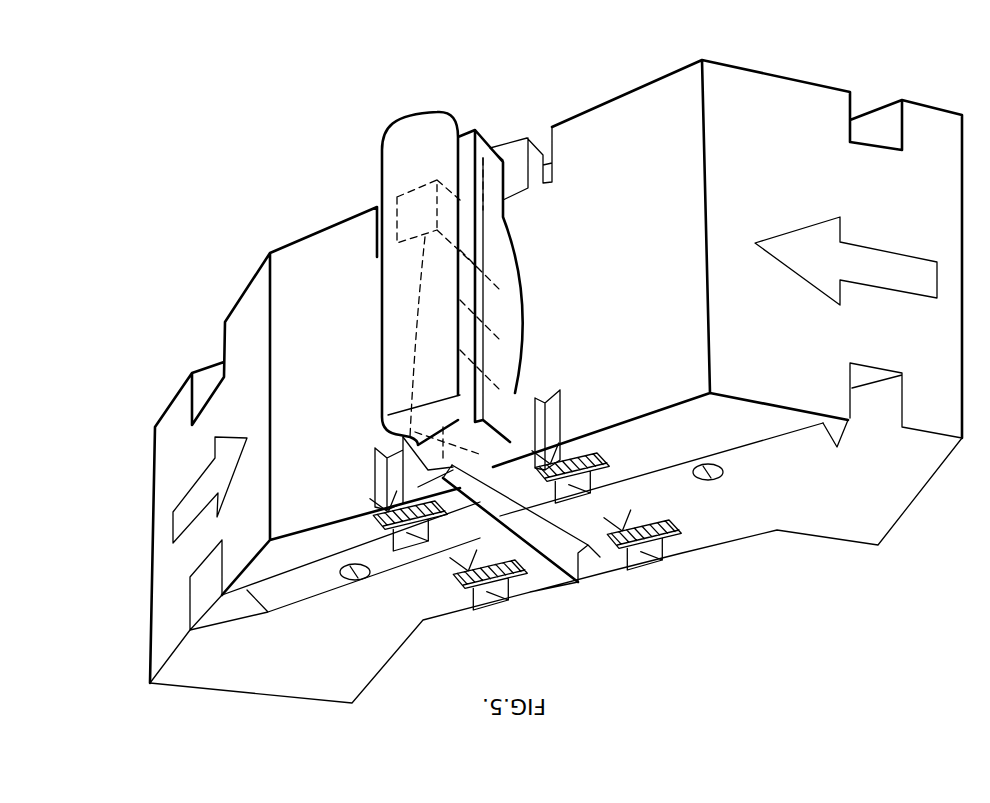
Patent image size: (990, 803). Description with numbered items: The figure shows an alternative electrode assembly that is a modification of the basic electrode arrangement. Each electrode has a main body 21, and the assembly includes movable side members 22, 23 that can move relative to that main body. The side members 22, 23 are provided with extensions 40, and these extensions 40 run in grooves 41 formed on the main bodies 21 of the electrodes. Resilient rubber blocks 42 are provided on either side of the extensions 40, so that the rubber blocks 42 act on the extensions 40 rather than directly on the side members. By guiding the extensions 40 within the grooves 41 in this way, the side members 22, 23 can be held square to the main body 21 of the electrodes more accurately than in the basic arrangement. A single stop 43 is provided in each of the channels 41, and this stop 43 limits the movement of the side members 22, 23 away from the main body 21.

The main body 21 is at (252, 677).
The movable side member 22 is at (642, 560).
The movable side member 23 is at (553, 585).
The extension 40 is at (408, 568).
The groove 41 is at (202, 613).
The resilient rubber block 42 is at (380, 523).
The stop 43 is at (353, 580).